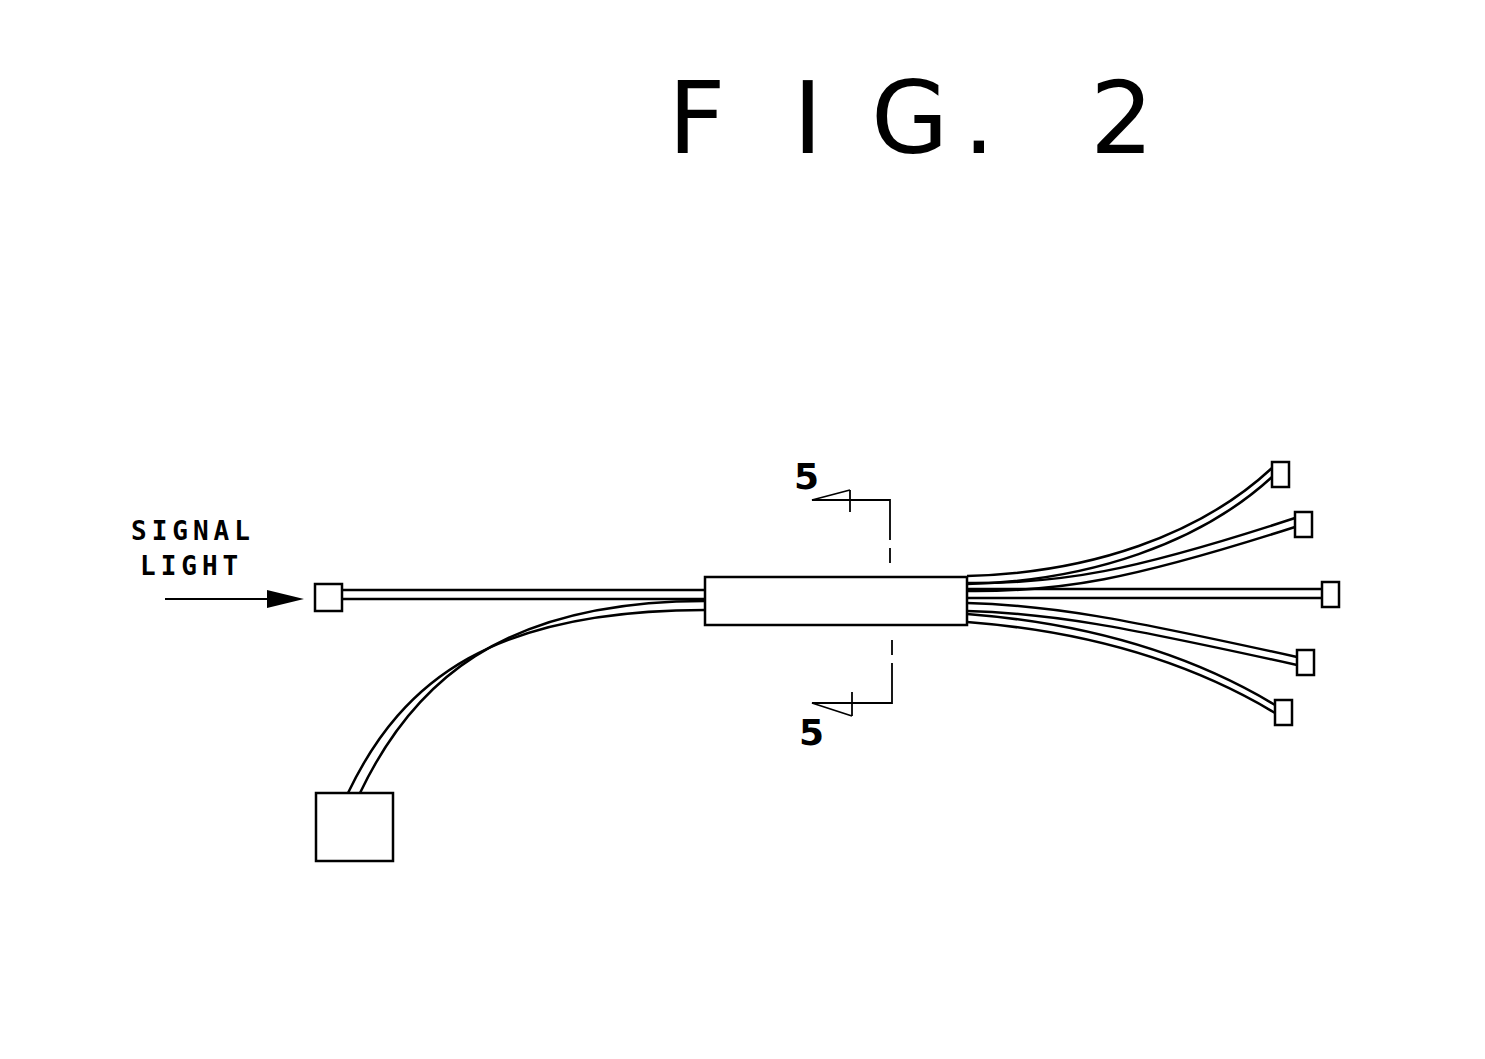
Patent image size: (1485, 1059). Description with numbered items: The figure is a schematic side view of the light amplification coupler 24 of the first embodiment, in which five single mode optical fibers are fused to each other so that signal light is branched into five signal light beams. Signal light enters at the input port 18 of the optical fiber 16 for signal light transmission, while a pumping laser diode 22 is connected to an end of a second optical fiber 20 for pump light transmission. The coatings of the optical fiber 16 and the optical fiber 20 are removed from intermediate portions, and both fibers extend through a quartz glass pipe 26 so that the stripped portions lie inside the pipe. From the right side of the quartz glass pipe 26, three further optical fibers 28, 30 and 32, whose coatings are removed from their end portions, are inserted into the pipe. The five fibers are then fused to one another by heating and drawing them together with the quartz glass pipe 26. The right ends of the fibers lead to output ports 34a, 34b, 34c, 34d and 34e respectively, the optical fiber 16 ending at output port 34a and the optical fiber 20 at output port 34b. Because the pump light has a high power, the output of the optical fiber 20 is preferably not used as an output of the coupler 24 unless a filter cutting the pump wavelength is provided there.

The optical fiber for signal light transmission 16 is at (487, 591).
The input port 18 is at (327, 583).
The optical fiber for pump light transmission 20 is at (455, 667).
The pumping laser diode 22 is at (340, 862).
The light amplification coupler 24 is at (936, 552).
The quartz glass pipe 26 is at (768, 577).
The optical fiber 28 is at (1105, 555).
The optical fiber 30 is at (1168, 558).
The optical fiber 32 is at (1108, 633).
The output port 34a is at (1340, 594).
The output port 34b is at (1315, 660).
The output port 34c is at (1290, 470).
The output port 34d is at (1313, 522).
The output port 34e is at (1293, 710).